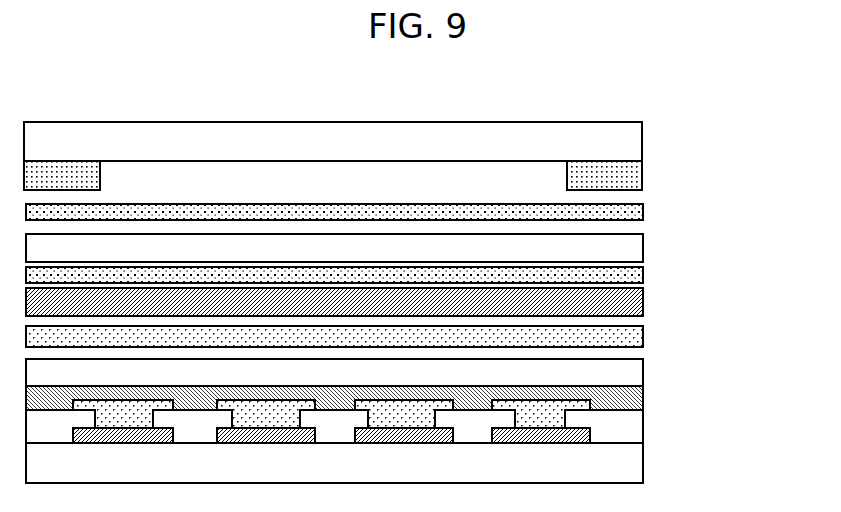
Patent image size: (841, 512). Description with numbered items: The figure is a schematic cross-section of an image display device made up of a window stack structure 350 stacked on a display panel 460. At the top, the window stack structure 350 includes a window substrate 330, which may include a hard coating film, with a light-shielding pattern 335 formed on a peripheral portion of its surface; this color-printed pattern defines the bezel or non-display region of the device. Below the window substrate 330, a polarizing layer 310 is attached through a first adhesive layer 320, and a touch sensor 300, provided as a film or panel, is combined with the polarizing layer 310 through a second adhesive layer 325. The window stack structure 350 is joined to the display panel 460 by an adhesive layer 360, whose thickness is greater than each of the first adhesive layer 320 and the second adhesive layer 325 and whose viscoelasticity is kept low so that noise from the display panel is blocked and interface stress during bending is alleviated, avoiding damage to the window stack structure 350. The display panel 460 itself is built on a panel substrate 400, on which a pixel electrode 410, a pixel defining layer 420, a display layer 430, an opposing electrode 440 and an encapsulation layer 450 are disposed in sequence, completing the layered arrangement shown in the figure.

The touch sensor 300 is at (643, 296).
The polarizing layer 310 is at (641, 247).
The first adhesive layer 320 is at (643, 212).
The second adhesive layer 325 is at (643, 271).
The window substrate 330 is at (633, 141).
The light-shielding pattern 335 is at (643, 177).
The window stack structure 350 is at (766, 133).
The adhesive layer 360 is at (644, 327).
The panel substrate 400 is at (638, 463).
The pixel electrode 410 is at (590, 435).
The pixel defining layer 420 is at (637, 420).
The display layer 430 is at (553, 412).
The opposing electrode 440 is at (643, 380).
The encapsulation layer 450 is at (630, 368).
The display panel 460 is at (766, 332).